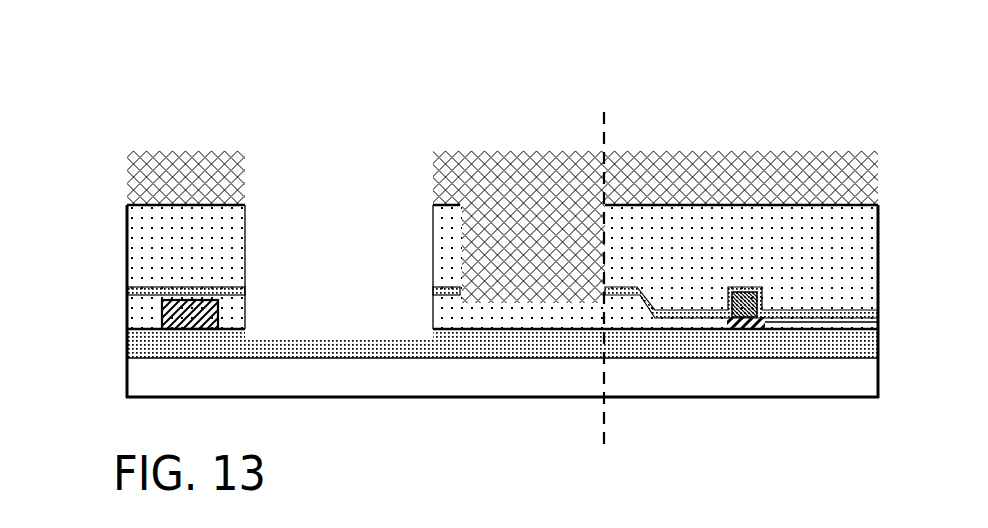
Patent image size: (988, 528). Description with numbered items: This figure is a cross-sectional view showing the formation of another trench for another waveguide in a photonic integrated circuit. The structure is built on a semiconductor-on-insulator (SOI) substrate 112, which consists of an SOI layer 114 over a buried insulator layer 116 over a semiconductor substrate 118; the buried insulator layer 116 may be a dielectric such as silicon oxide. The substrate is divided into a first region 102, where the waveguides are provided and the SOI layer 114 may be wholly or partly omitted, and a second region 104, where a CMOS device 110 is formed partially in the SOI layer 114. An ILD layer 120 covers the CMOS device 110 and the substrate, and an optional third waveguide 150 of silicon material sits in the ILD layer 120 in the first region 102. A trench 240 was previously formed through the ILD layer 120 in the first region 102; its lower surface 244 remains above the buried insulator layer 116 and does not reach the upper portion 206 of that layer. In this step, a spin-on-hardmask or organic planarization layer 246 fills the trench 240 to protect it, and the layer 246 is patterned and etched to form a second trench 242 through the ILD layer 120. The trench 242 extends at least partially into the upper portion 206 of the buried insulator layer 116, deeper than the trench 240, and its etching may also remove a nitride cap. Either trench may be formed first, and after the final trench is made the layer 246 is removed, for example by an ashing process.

The first region 102 is at (126, 78).
The second region 104 is at (605, 78).
The CMOS device 110 is at (775, 286).
The semiconductor-on-insulator (SOI) substrate 112 is at (115, 295).
The semiconductor-on-insulator (SOI) layer 114 is at (877, 325).
The buried insulator layer 116 is at (855, 339).
The semiconductor substrate 118 is at (855, 382).
The ILD layer 120 is at (145, 257).
The third waveguide 150 is at (192, 340).
The upper portion of buried insulator layer 206 is at (447, 329).
The trench 240 is at (463, 227).
The trench 242 is at (243, 227).
The lower surface of trench 244 is at (553, 304).
The spin-on-hardmask (SOH) or organic planarization layer (OPL) 246 is at (799, 183).